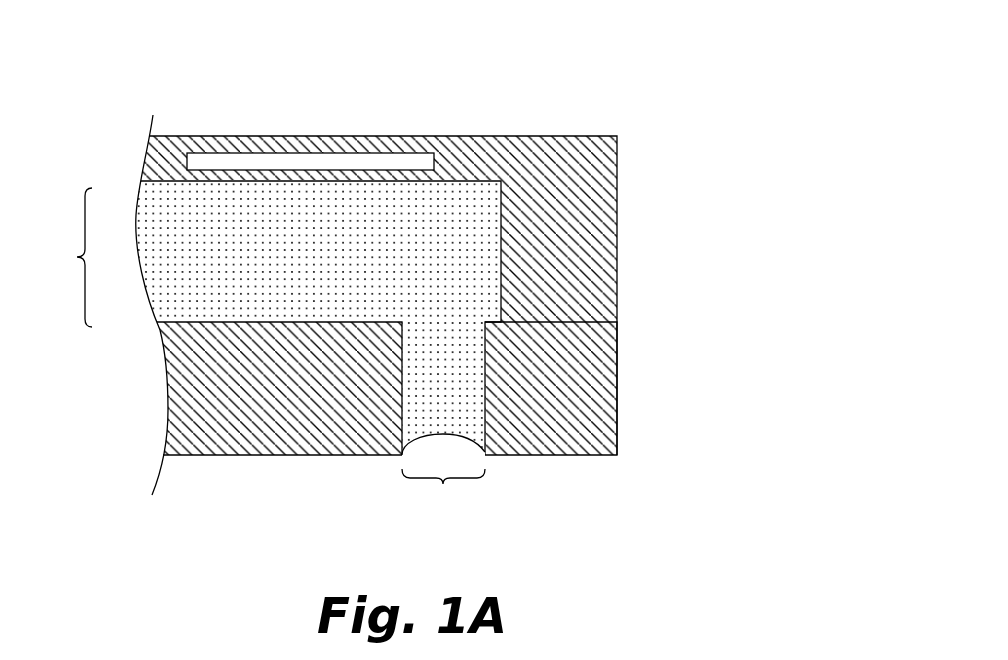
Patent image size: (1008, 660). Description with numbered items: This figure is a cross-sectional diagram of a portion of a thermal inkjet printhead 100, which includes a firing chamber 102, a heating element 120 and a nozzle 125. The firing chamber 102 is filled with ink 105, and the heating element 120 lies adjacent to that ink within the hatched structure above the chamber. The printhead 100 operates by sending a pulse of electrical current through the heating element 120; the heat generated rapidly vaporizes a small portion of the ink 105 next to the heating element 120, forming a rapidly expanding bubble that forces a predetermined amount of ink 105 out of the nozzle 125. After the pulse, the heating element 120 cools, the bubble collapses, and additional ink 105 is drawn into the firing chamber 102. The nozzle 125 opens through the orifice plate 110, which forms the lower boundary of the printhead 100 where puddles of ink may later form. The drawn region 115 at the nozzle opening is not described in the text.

The thermal inkjet printhead 100 is at (641, 102).
The firing chamber 102 is at (63, 257).
The ink 105 is at (309, 256).
The orifice plate 110 is at (259, 410).
The opening surface 115 is at (477, 447).
The heating element 120 is at (278, 161).
The nozzle 125 is at (443, 484).